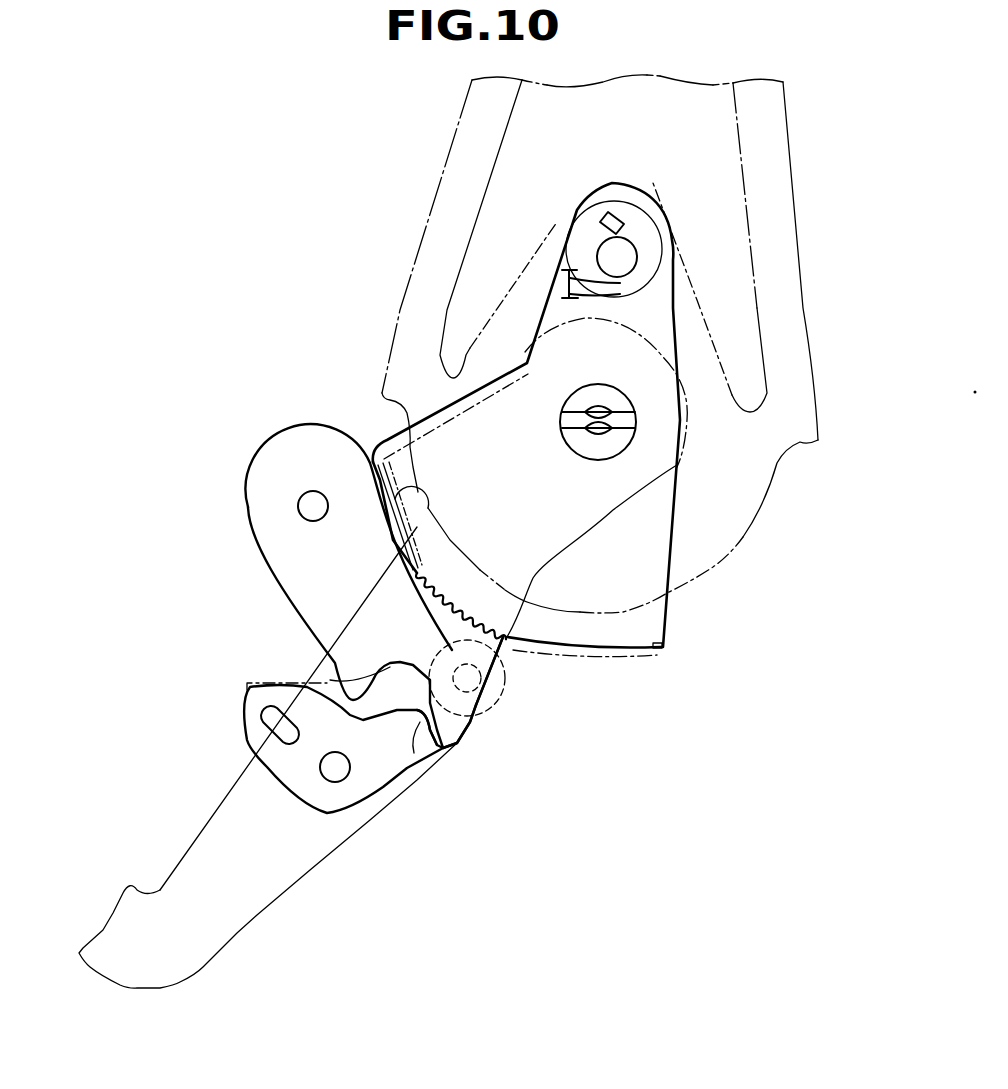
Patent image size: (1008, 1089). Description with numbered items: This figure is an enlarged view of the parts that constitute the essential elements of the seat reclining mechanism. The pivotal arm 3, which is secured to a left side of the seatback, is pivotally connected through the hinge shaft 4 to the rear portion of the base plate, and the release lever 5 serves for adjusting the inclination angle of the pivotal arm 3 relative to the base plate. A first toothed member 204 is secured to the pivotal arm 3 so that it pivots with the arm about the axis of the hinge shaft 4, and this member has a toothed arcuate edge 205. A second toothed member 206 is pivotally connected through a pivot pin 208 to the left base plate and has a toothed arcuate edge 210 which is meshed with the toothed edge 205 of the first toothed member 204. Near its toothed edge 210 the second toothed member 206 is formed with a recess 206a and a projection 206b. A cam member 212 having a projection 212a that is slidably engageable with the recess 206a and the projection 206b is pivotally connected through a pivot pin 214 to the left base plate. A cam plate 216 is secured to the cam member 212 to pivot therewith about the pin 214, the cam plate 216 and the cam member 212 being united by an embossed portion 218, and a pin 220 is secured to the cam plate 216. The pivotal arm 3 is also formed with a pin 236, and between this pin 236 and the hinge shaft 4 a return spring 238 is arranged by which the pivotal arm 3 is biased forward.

The pivotal arm 3 is at (780, 238).
The hinge shaft 4 is at (600, 390).
The release lever 5 is at (183, 857).
The first toothed member 204 is at (660, 320).
The toothed arcuate edge 205 is at (380, 473).
The second toothed member 206 is at (293, 580).
The recess 206a is at (480, 703).
The projection 206b is at (467, 740).
The pivot pin 208 is at (305, 503).
The toothed arcuate edge 210 is at (447, 595).
The cam member 212 is at (373, 770).
The projection 212a is at (420, 735).
The pivot pin 214 is at (330, 773).
The cam plate 216 is at (447, 655).
The embossed portion 218 is at (270, 718).
The pin 220 is at (470, 675).
The pin 236 is at (618, 253).
The return spring 238 is at (640, 243).